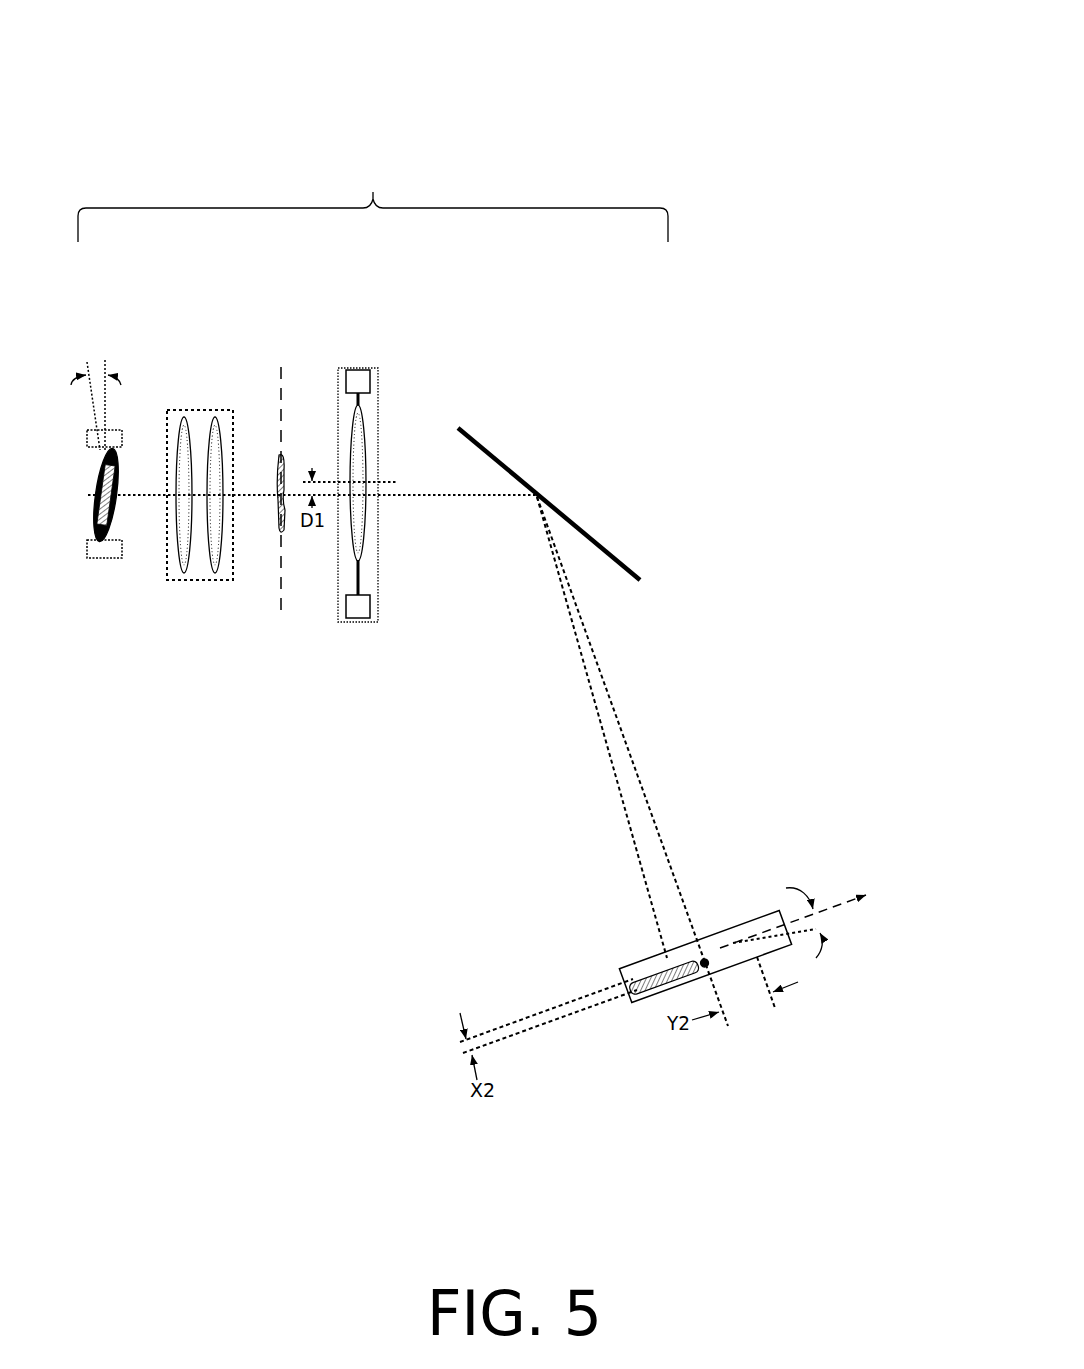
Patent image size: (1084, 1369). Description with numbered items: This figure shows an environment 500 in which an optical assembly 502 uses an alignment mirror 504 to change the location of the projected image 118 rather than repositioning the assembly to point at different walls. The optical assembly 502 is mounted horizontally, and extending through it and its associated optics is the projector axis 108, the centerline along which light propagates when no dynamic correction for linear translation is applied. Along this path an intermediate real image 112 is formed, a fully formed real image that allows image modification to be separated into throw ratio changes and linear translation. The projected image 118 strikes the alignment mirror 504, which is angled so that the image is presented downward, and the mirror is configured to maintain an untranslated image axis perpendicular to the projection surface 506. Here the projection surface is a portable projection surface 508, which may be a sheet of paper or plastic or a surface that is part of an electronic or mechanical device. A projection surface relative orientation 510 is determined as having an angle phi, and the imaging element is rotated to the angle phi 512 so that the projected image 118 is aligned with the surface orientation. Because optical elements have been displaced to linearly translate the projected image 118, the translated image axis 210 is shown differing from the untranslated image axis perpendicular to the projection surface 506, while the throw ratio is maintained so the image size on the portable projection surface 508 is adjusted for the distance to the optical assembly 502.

The environment 500 is at (826, 36).
The optical assembly 502 is at (373, 187).
The projector axis 108 is at (132, 494).
The intermediate real image 112 is at (283, 439).
The alignment mirror 504 is at (583, 527).
The translated image axis 210 is at (606, 751).
The untranslated image axis perpendicular to the projection surface 506 is at (639, 772).
The portable projection surface 508 is at (636, 1003).
The projected image 118 is at (652, 974).
The projection surface relative orientation 510 is at (833, 859).
The angle phi 512 is at (105, 549).